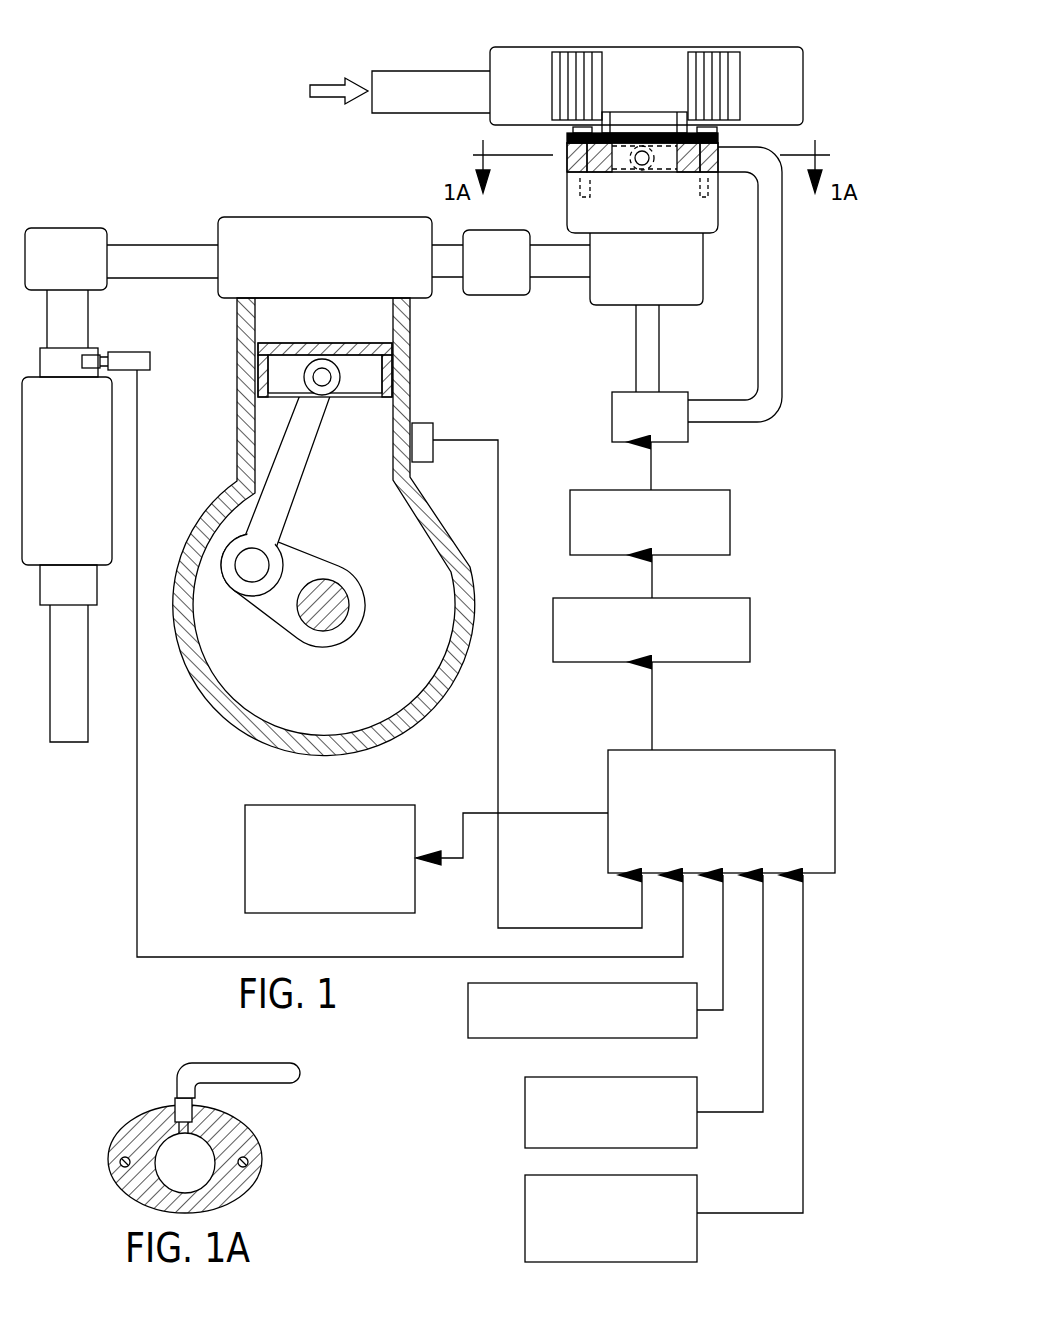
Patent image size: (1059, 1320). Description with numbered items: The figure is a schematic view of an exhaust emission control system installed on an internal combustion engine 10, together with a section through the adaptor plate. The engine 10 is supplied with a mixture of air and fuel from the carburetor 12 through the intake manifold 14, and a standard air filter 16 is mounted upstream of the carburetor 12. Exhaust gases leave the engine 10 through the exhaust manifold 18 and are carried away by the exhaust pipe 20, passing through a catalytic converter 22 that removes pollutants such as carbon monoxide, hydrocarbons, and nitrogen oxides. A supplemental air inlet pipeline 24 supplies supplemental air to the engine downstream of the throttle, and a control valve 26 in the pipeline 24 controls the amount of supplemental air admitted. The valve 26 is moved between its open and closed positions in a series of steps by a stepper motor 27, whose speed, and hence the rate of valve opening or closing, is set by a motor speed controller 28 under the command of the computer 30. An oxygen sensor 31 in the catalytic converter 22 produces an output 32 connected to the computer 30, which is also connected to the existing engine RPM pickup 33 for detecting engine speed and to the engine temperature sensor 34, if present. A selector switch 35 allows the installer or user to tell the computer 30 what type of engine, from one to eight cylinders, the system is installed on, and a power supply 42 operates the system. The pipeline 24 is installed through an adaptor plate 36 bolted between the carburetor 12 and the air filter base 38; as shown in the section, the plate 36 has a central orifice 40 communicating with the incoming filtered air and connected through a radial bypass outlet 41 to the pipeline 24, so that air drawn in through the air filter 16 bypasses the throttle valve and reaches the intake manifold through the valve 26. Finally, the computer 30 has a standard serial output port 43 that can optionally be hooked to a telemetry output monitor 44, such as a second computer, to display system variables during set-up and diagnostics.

In FIG. 1, the internal combustion engine 10 is at (250, 765).
In FIG. 1, the carburetor 12 is at (678, 268).
In FIG. 1, the intake manifold 14 is at (495, 295).
In FIG. 1, the air filter 16 is at (735, 48).
In FIG. 1, the exhaust manifold 18 is at (75, 232).
In FIG. 1, the exhaust pipe 20 is at (85, 690).
In FIG. 1, the catalytic converter 22 is at (108, 572).
In FIG. 1, the supplemental air inlet pipeline 24 is at (776, 308).
In FIG. 1A, the supplemental air inlet pipeline 24 is at (232, 1070).
In FIG. 1, the control valve 26 is at (612, 405).
In FIG. 1, the stepper motor 27 is at (725, 490).
In FIG. 1, the motor speed controller 28 is at (732, 598).
In FIG. 1, the computer 30 is at (728, 750).
In FIG. 1, the oxygen sensor 31 is at (125, 352).
In FIG. 1, the output 32 is at (180, 957).
In FIG. 1, the engine RPM pickup 33 is at (468, 1008).
In FIG. 1, the engine temperature sensor 34 is at (433, 425).
In FIG. 1, the selector switch 35 is at (525, 1200).
In FIG. 1, the adaptor plate 36 is at (567, 160).
In FIG. 1A, the adaptor plate 36 is at (243, 1138).
In FIG. 1, the air filter base 38 is at (636, 120).
In FIG. 1A, the central orifice 40 is at (200, 1172).
In FIG. 1, the radial bypass outlet 41 is at (643, 166).
In FIG. 1A, the radial bypass outlet 41 is at (150, 1126).
In FIG. 1, the power supply 42 is at (525, 1113).
In FIG. 1, the serial output port 43 is at (482, 813).
In FIG. 1, the telemetry output monitor 44 is at (330, 805).